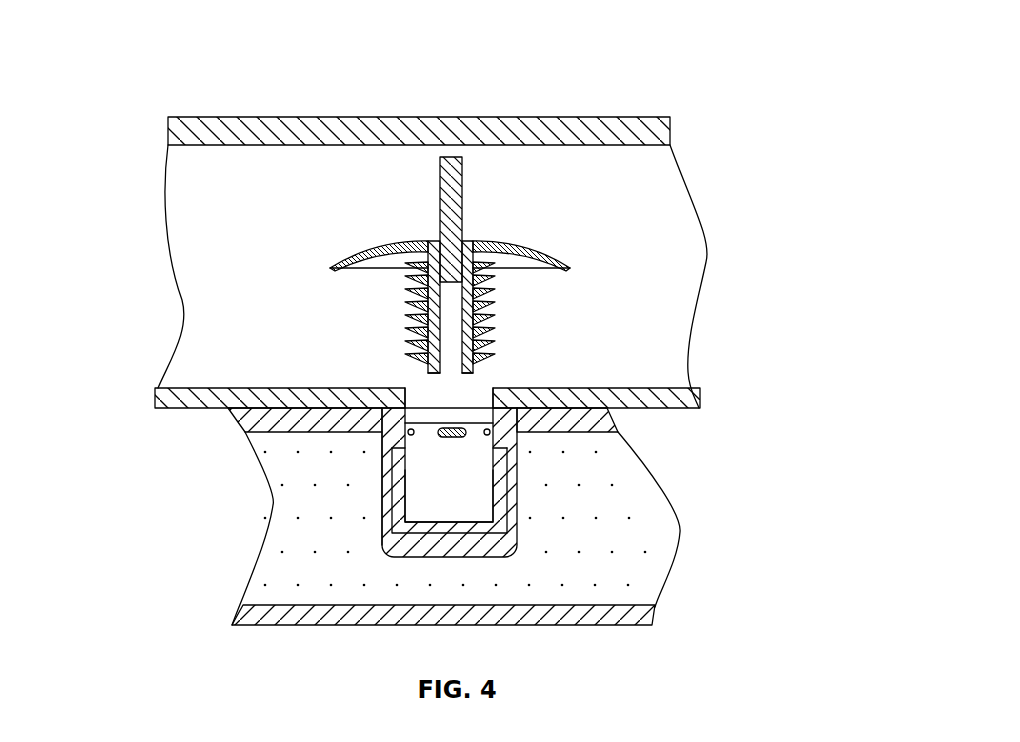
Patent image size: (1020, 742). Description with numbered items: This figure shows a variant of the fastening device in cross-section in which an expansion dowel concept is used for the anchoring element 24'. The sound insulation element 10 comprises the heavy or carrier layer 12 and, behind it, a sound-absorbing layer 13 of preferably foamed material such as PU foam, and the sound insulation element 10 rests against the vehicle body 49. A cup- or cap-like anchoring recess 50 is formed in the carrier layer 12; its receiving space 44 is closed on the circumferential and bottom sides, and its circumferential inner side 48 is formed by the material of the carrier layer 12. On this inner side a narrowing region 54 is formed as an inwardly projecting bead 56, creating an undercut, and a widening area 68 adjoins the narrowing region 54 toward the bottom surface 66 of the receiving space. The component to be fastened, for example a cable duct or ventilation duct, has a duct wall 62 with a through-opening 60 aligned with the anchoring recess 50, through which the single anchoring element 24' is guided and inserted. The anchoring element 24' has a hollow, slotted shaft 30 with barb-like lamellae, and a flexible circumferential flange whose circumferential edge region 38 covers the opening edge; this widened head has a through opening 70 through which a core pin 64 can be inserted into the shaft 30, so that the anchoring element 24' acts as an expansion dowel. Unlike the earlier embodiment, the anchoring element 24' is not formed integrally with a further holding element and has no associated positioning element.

The sound insulation element 10 is at (393, 473).
The carrier layer 12 is at (575, 416).
The sound-absorbing layer 13 is at (573, 588).
The anchoring element 24' is at (506, 207).
The shaft 30 is at (498, 325).
The circumferential edge region 38 is at (570, 268).
The receiving space 44 is at (227, 552).
The circumferential inner side 48 is at (490, 487).
The vehicle body 49 is at (533, 607).
The anchoring recess 50 is at (322, 563).
The narrowing region 54 is at (383, 470).
The bead 56 is at (480, 434).
The through-opening 60 is at (413, 397).
The duct wall 62 is at (630, 418).
The core pin 64 is at (452, 210).
The bottom surface 66 is at (437, 442).
The widening area 68 is at (425, 488).
The through opening 70 is at (543, 240).